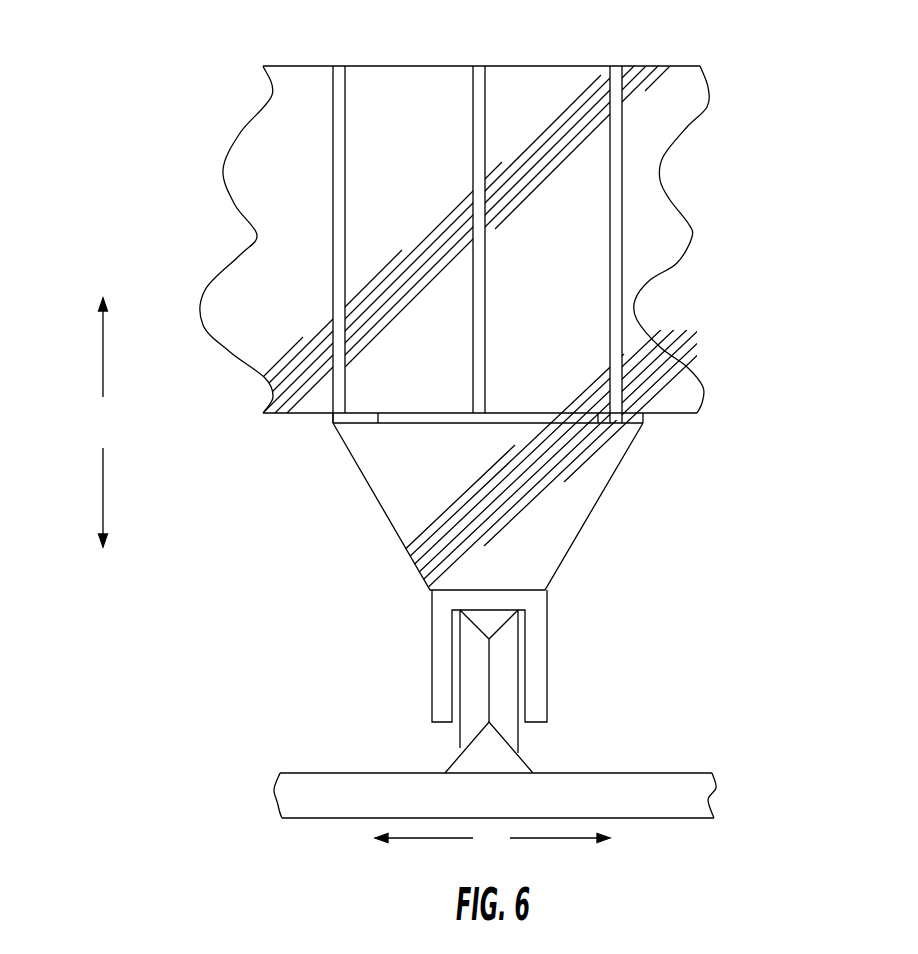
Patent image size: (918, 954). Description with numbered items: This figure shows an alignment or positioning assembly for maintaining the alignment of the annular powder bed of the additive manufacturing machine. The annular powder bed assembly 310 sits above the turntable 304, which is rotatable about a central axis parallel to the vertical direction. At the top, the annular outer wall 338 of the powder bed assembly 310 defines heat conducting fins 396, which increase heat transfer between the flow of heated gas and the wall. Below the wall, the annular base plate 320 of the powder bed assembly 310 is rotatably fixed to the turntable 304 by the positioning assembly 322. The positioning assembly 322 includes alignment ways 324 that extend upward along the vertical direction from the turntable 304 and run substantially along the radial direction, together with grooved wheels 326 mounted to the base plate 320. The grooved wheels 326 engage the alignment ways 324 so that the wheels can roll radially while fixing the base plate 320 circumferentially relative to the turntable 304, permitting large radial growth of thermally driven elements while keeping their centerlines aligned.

The annular powder bed assembly 310 is at (98, 147).
The annular outer wall 338 is at (687, 104).
The heat conducting fins 396 is at (482, 66).
The annular base plate 320 is at (293, 413).
The positioning assembly 322 is at (285, 683).
The grooved wheels 326 is at (507, 682).
The alignment ways 324 is at (507, 762).
The turntable 304 is at (687, 800).